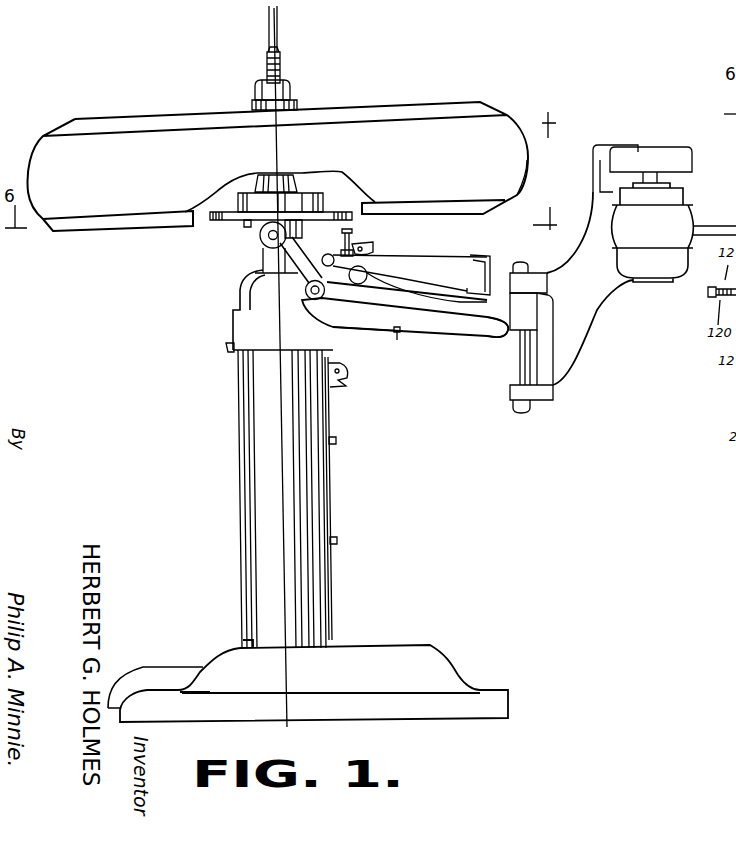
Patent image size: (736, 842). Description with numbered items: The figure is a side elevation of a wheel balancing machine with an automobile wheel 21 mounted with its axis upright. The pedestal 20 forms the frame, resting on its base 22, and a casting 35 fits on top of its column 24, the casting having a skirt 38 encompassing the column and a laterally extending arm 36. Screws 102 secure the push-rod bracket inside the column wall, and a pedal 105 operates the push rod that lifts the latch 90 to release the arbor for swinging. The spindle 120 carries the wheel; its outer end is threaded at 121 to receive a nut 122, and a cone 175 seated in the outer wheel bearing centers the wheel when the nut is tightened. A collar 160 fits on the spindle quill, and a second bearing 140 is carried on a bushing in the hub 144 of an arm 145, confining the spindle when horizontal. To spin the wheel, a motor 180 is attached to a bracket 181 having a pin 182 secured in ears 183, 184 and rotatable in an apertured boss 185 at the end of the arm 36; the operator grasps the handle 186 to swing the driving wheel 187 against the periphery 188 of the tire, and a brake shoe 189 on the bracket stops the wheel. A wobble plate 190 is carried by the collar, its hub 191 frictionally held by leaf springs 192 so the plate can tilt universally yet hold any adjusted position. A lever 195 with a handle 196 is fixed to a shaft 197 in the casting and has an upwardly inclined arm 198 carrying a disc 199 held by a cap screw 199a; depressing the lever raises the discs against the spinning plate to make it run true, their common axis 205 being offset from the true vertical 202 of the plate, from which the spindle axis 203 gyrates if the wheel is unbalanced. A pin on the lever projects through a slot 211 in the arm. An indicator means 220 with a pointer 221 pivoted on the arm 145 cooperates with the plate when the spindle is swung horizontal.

The pedestal 20 is at (333, 594).
The automobile wheel 21 is at (406, 113).
The base 22 is at (406, 652).
The column 24 is at (333, 497).
The casting 35 is at (240, 335).
The arm 36 is at (422, 335).
The skirt 38 is at (230, 352).
The latch 90 is at (354, 383).
The screws 102 is at (337, 440).
The pedal 105 is at (137, 667).
The spindle 120 is at (265, 65).
The threaded portion 121 is at (283, 68).
The nut 122 is at (291, 88).
The second bearing 140 is at (300, 251).
The hub 144 is at (265, 252).
The arm 145 is at (404, 256).
The collar 160 is at (317, 180).
The cone 175 is at (257, 109).
The motor 180 is at (687, 217).
The bracket 181 is at (580, 347).
The pin 182 is at (517, 370).
The ear 183 is at (546, 398).
The ear 184 is at (537, 270).
The apertured boss 185 is at (532, 320).
The handle 186 is at (718, 228).
The driving wheel 187 is at (663, 153).
The periphery of the tire 188 is at (526, 153).
The brake shoe 189 is at (607, 145).
The wobble plate 190 is at (208, 219).
The hub 191 is at (235, 202).
The leaf springs 192 is at (246, 222).
The lever 195 is at (380, 331).
The handle 196 is at (483, 329).
The shaft 197 is at (306, 294).
The upwardly inclined arm 198 is at (276, 272).
The disc 199 is at (268, 237).
The cap screw 199a is at (266, 240).
The true vertical 202 is at (281, 40).
The axis of the spindle 203 is at (268, 28).
The common axis 205 is at (265, 243).
The slot 211 is at (397, 340).
The indicator means 220 is at (393, 248).
The pointer 221 is at (463, 263).